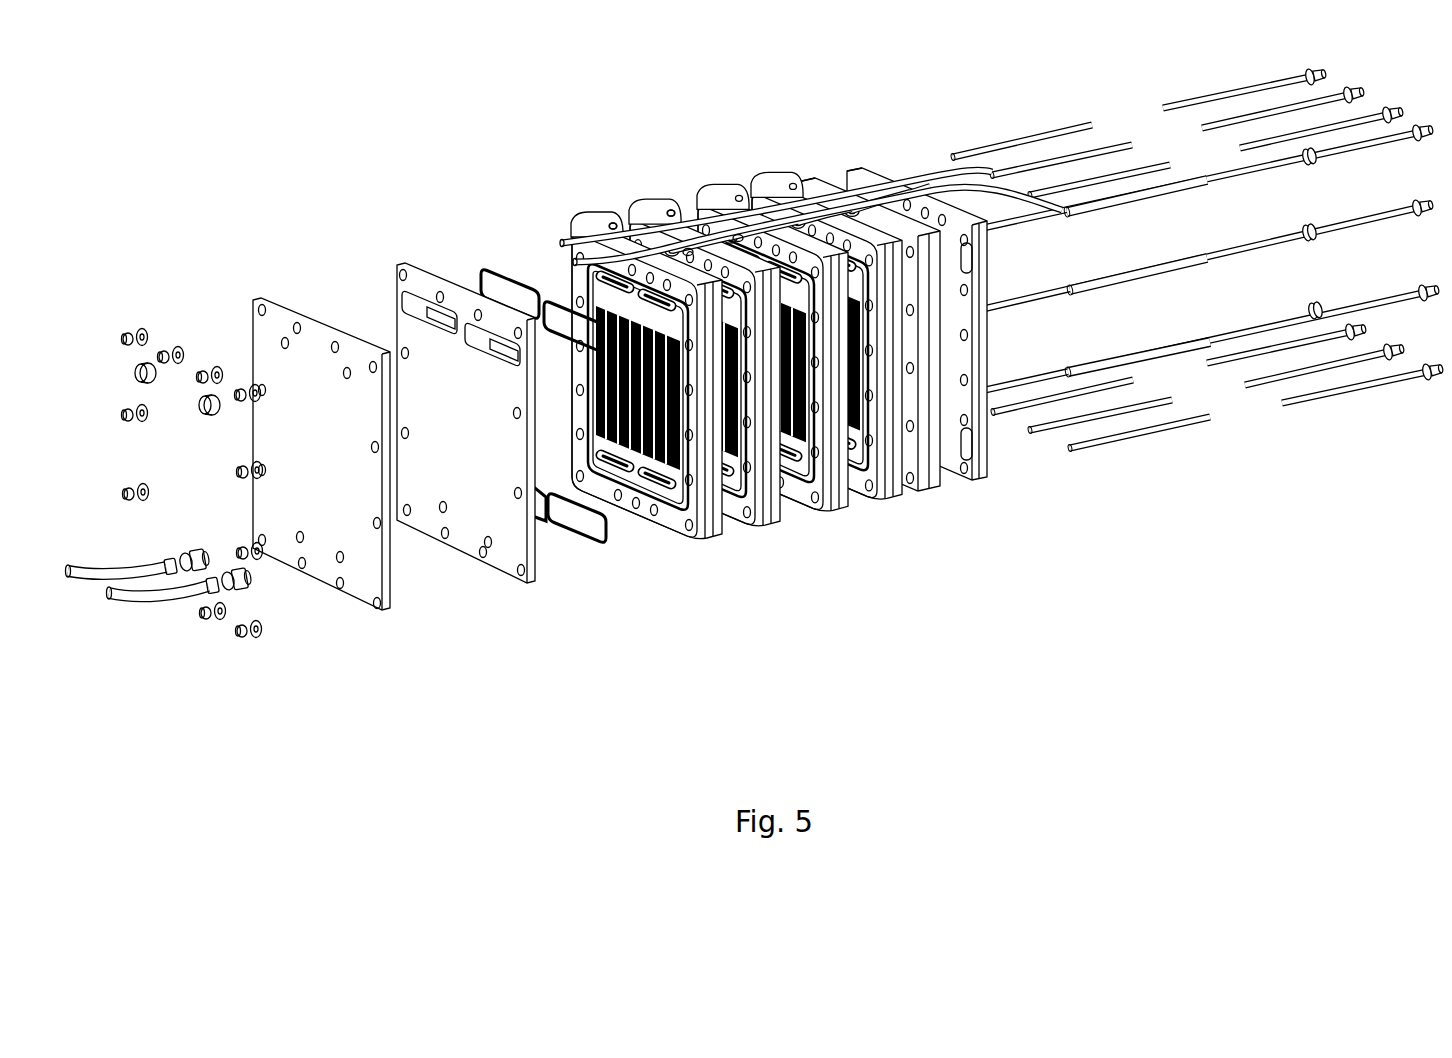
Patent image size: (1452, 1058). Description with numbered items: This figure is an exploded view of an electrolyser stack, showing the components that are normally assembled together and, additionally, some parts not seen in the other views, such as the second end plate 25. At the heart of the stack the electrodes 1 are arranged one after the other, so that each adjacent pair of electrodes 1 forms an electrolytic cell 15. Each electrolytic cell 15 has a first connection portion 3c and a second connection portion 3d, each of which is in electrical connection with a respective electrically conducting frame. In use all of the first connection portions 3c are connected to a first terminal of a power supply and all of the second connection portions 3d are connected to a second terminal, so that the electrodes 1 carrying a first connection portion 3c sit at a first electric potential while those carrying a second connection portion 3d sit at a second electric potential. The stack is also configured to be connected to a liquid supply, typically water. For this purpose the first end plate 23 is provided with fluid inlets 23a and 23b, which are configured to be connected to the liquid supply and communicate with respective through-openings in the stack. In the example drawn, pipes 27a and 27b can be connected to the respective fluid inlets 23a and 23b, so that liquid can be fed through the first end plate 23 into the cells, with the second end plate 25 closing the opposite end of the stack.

The electrode 1 is at (703, 547).
The electrolytic cell 15 is at (580, 208).
The first connection portion 3c is at (607, 225).
The second connection portion 3d is at (688, 252).
The second end plate 25 is at (890, 182).
The first end plate 23 is at (277, 327).
The fluid inlet 23a is at (301, 543).
The fluid inlet 23b is at (341, 563).
The pipe 27a is at (110, 564).
The pipe 27b is at (145, 603).